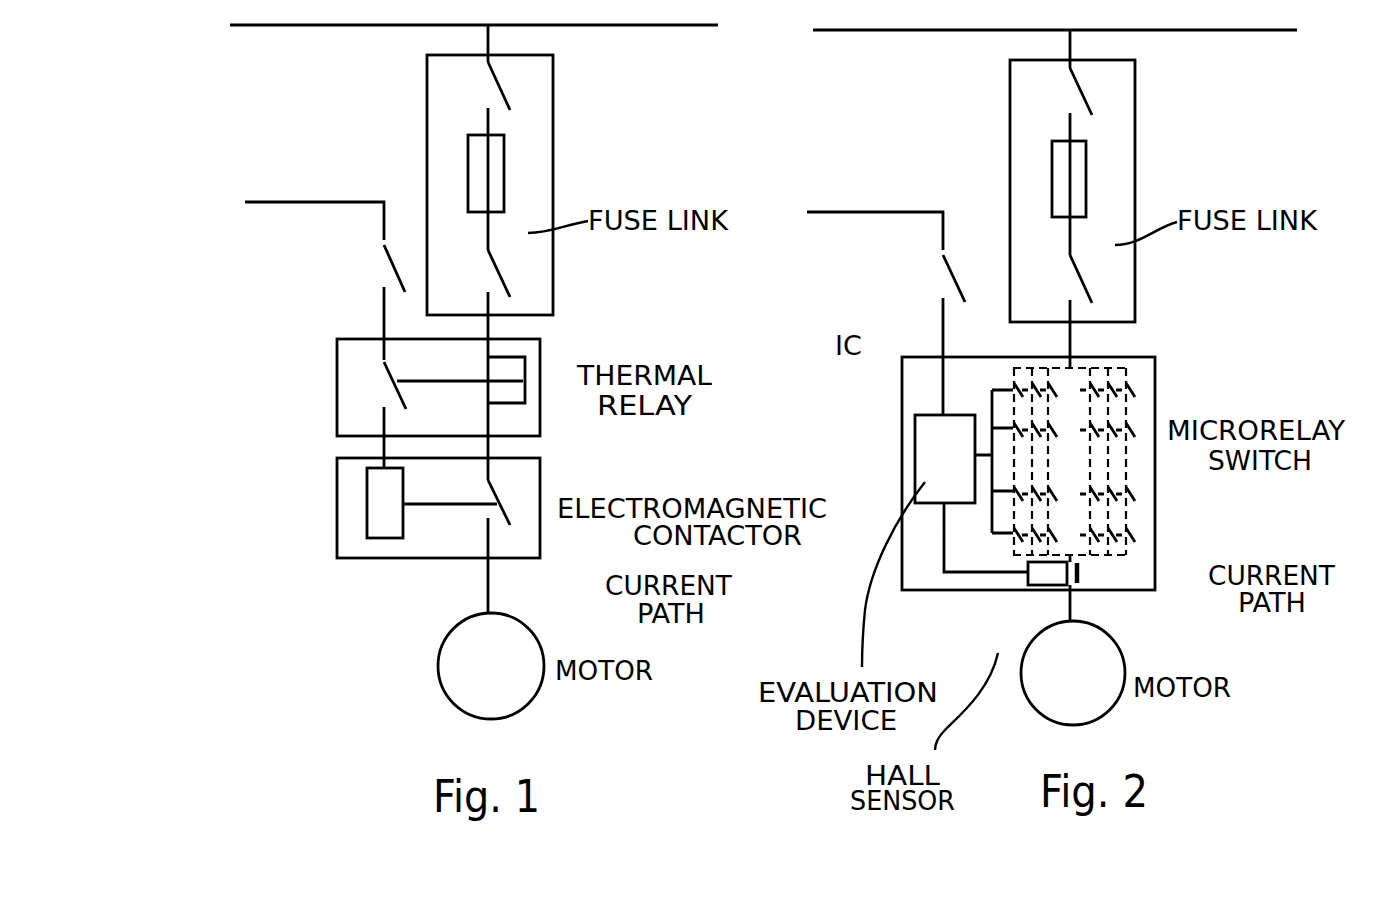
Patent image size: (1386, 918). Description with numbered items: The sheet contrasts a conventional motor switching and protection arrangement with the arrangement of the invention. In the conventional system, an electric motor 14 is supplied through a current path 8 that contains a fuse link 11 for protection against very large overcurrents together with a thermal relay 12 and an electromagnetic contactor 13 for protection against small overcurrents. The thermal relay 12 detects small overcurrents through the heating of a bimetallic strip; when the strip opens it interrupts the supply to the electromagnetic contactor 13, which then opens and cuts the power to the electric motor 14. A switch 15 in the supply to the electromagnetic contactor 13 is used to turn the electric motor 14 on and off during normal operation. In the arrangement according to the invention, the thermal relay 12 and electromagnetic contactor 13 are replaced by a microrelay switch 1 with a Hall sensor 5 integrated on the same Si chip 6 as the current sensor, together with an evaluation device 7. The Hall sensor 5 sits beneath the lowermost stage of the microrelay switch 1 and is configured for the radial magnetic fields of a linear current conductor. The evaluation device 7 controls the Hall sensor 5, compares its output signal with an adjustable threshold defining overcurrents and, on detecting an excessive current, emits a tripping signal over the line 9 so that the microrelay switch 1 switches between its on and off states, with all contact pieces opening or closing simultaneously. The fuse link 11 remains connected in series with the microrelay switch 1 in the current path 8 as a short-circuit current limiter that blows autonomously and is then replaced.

In FIG. 2, the microrelay switch 1 is at (1132, 417).
In FIG. 2, the Hall sensor 5 is at (1053, 572).
In FIG. 2, the Si chip 6 is at (922, 392).
In FIG. 2, the evaluation device 7 is at (933, 450).
In FIG. 1, the current path 8 is at (490, 42).
In FIG. 2, the current path 8 is at (1073, 43).
In FIG. 2, the tripping signal line 9 is at (982, 463).
In FIG. 1, the fuse link 11 is at (504, 175).
In FIG. 2, the fuse link 11 is at (1086, 177).
In FIG. 1, the thermal relay 12 is at (527, 363).
In FIG. 1, the electromagnetic contactor 13 is at (498, 498).
In FIG. 1, the electric motor 14 is at (513, 652).
In FIG. 2, the electric motor 14 is at (1098, 667).
In FIG. 1, the switch 15 is at (402, 263).
In FIG. 2, the switch 15 is at (963, 275).